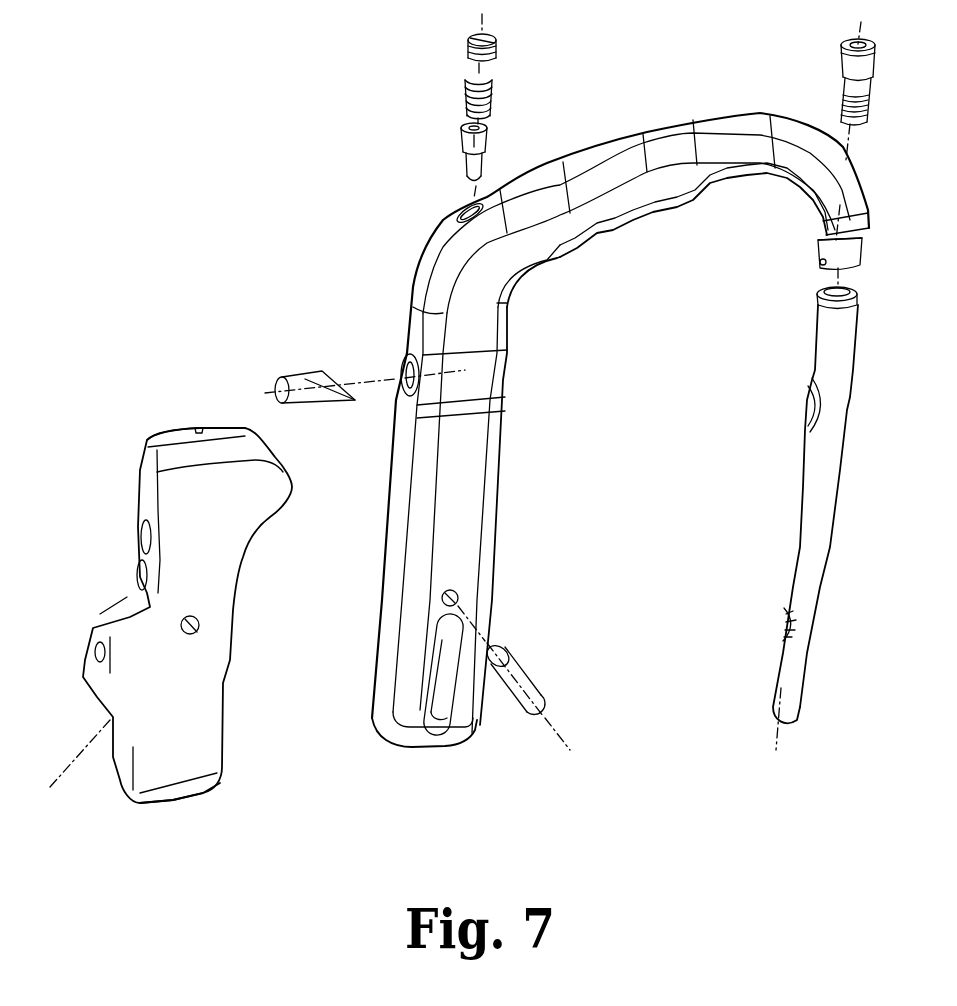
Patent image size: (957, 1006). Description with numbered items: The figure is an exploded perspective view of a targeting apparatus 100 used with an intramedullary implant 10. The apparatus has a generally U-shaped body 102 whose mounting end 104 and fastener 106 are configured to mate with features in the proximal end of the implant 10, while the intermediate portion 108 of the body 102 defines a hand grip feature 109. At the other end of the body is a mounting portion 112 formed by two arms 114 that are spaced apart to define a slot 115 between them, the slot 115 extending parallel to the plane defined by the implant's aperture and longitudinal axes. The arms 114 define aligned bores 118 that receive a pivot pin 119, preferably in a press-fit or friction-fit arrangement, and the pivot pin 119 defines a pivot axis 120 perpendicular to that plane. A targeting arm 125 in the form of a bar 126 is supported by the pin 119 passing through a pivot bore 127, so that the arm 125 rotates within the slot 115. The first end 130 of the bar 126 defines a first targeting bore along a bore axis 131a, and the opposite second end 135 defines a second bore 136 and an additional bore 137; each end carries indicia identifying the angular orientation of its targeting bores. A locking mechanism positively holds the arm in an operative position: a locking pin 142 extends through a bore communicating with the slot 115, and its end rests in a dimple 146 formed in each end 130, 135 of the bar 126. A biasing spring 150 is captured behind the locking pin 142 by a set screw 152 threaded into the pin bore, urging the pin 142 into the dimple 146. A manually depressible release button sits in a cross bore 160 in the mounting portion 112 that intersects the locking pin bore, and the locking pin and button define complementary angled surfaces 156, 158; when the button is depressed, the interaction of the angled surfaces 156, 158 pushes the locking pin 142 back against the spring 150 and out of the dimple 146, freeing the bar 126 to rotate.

The intramedullary implant 10 is at (786, 549).
The targeting apparatus 100 is at (368, 280).
The generally U-shaped body 102 is at (540, 281).
The mounting end 104 is at (821, 252).
The fastener 106 is at (838, 80).
The intermediate portion 108 is at (609, 152).
The hand grip feature 109 is at (598, 235).
The mounting portion 112 is at (490, 481).
The arms 114 is at (488, 563).
The slot 115 is at (390, 745).
The aligned bores 118 is at (459, 600).
The pivot pin 119 is at (529, 678).
The pivot axis 120 is at (561, 745).
The targeting arm 125 is at (238, 576).
The bar 126 is at (206, 663).
The pivot bore 127 is at (200, 630).
The first end 130 is at (190, 790).
The bore axis 131a is at (77, 757).
The second end 135 is at (156, 437).
The second bore 136 is at (137, 586).
The additional bore 137 is at (140, 561).
The locking pin 142 is at (460, 138).
The dimple 146 is at (200, 425).
The biasing spring 150 is at (467, 96).
The set screw 152 is at (468, 45).
The angled surface 156 is at (483, 166).
The angled surface 158 is at (323, 374).
The cross bore 160 is at (401, 383).